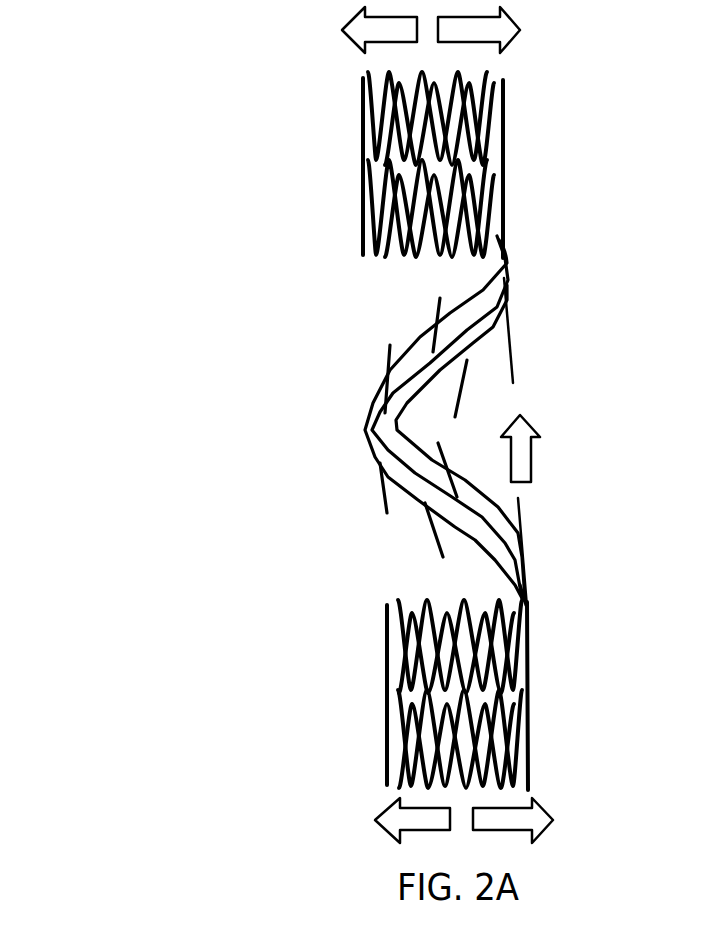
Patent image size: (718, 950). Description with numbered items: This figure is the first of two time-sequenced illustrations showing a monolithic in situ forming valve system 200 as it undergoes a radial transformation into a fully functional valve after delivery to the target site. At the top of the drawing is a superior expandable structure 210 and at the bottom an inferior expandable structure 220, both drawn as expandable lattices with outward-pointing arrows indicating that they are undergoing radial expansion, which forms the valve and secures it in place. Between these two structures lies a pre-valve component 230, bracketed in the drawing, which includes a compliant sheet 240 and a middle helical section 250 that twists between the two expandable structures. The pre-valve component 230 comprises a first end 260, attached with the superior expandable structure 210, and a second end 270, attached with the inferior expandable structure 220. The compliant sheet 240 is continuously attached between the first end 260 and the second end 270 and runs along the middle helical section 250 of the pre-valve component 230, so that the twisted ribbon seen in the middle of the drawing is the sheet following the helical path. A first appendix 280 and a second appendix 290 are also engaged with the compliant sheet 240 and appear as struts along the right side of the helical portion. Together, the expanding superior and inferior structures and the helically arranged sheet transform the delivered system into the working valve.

The monolithic in situ forming valve system 200 is at (219, 642).
The superior expandable structure 210 is at (503, 188).
The inferior expandable structure 220 is at (527, 741).
The pre-valve component 230 is at (270, 255).
The compliant sheet 240 is at (440, 338).
The middle helical section 250 is at (483, 535).
The first end 260 is at (503, 242).
The second end 270 is at (523, 592).
The first appendix 280 is at (510, 325).
The second appendix 290 is at (523, 518).